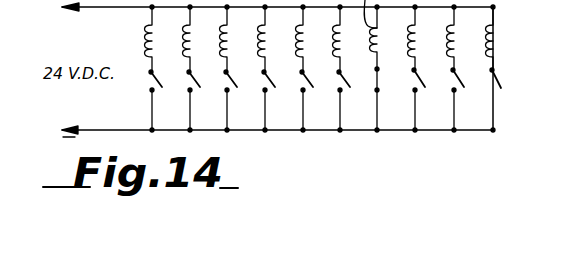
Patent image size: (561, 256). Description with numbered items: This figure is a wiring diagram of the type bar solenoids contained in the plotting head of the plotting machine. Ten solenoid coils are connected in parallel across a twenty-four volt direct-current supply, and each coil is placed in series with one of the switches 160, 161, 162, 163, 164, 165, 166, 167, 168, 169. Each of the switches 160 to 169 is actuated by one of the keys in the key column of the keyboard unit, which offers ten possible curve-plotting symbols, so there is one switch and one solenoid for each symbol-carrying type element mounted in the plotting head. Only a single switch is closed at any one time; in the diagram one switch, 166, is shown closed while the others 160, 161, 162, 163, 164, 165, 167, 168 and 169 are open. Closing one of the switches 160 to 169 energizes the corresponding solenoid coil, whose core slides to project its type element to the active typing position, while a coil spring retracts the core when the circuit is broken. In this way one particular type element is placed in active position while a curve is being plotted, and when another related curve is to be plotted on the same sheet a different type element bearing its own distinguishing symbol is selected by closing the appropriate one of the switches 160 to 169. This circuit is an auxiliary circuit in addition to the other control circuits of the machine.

The switch 160 is at (150, 83).
The switch 161 is at (188, 83).
The switch 162 is at (225, 83).
The switch 163 is at (263, 83).
The switch 164 is at (301, 83).
The switch 165 is at (338, 83).
The switch 166 is at (375, 83).
The switch 167 is at (413, 83).
The switch 168 is at (452, 83).
The switch 169 is at (491, 83).